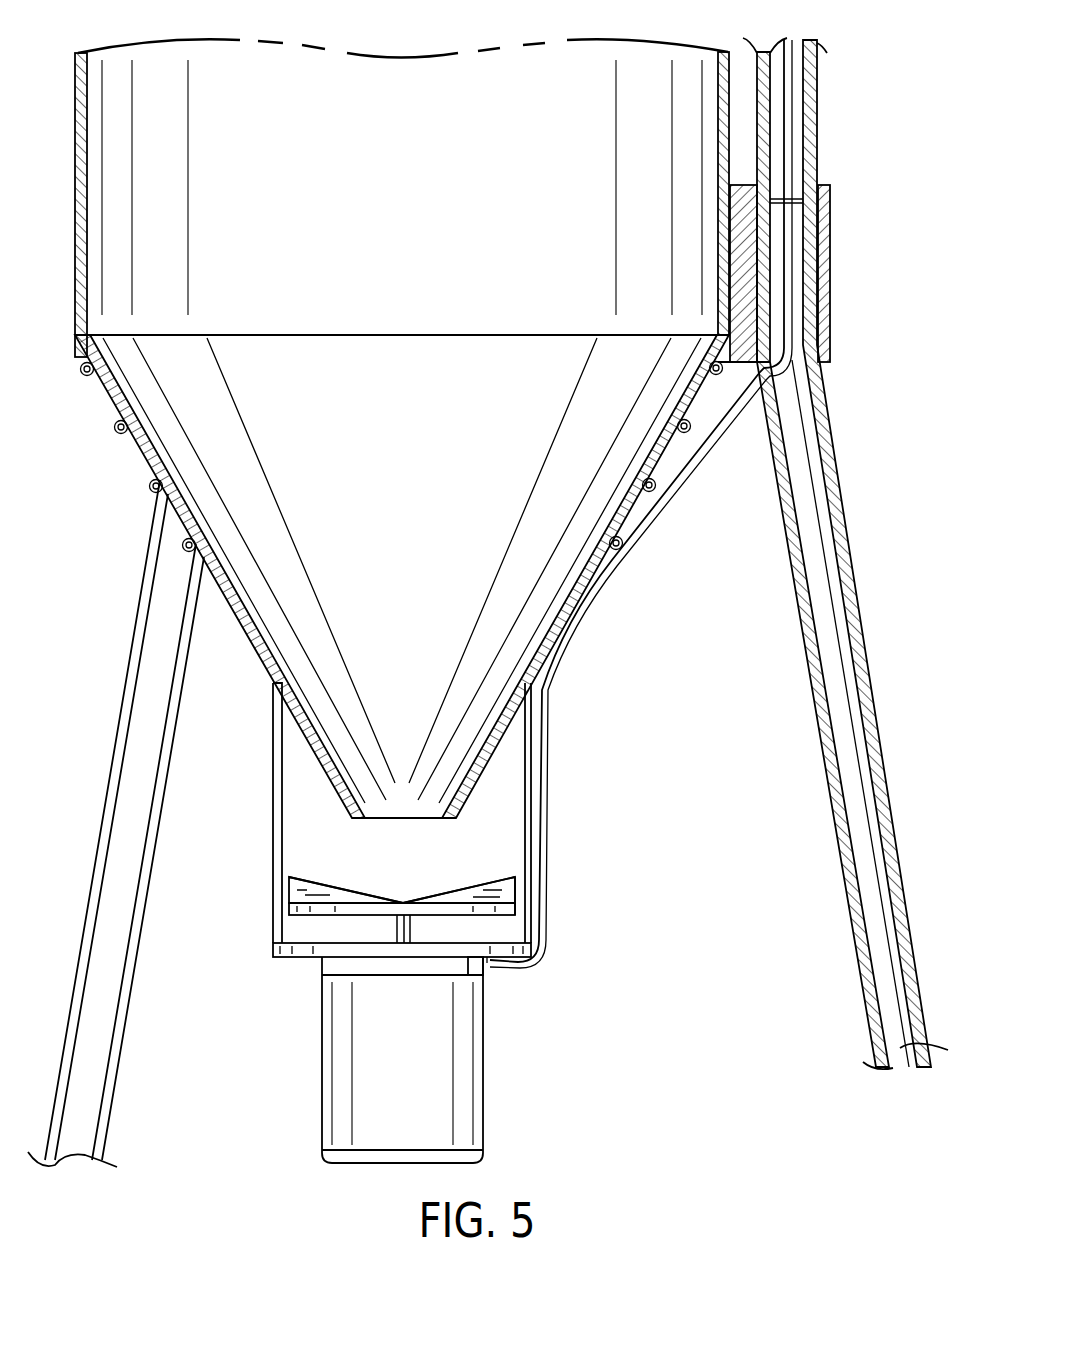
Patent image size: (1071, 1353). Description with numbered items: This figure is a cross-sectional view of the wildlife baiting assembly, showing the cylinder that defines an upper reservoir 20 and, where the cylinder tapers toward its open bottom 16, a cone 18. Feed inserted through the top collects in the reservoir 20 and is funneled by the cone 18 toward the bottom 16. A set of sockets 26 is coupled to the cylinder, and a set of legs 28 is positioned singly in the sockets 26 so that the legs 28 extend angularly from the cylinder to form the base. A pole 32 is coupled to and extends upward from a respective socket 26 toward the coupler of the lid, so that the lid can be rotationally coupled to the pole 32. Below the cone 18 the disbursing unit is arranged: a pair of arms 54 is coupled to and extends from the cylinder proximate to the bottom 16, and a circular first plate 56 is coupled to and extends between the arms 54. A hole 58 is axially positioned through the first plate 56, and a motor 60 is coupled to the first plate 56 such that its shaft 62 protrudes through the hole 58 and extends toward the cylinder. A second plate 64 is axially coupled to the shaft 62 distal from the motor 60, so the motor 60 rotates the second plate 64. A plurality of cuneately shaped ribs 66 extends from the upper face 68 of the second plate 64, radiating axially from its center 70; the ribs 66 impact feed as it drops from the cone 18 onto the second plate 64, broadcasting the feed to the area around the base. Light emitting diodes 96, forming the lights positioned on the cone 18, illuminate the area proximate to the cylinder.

The bottom 16 is at (403, 808).
The cone 18 is at (296, 561).
The reservoir 20 is at (162, 148).
The set of sockets 26 is at (827, 275).
The set of legs 28 is at (868, 862).
The pole 32 is at (813, 95).
The pair of arms 54 is at (277, 757).
The first plate 56 is at (468, 957).
The hole 58 is at (403, 950).
The motor 60 is at (360, 1075).
The shaft 62 is at (397, 925).
The second plate 64 is at (507, 913).
The ribs 66 is at (300, 877).
The upper face 68 is at (410, 902).
The center 70 is at (403, 903).
The light emitting diodes 96 is at (155, 487).